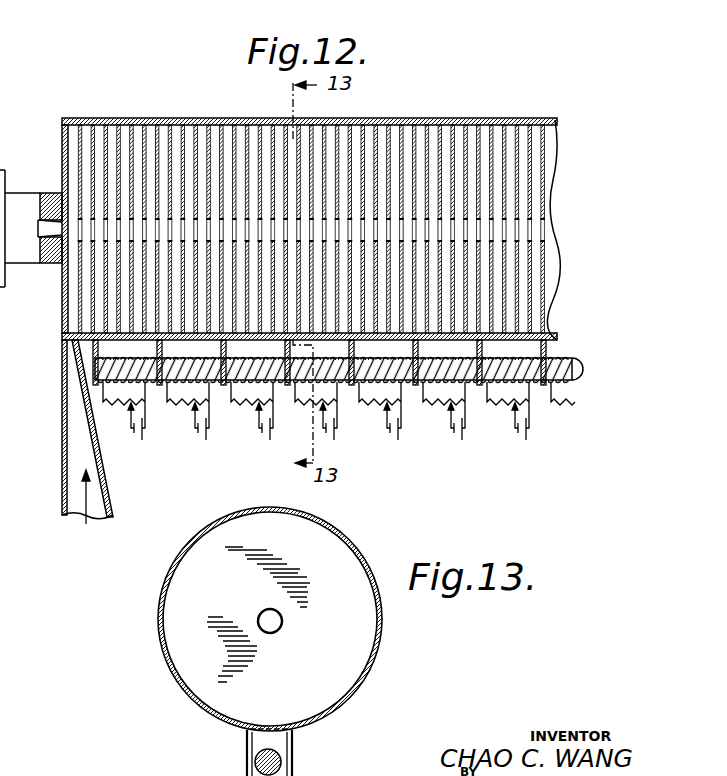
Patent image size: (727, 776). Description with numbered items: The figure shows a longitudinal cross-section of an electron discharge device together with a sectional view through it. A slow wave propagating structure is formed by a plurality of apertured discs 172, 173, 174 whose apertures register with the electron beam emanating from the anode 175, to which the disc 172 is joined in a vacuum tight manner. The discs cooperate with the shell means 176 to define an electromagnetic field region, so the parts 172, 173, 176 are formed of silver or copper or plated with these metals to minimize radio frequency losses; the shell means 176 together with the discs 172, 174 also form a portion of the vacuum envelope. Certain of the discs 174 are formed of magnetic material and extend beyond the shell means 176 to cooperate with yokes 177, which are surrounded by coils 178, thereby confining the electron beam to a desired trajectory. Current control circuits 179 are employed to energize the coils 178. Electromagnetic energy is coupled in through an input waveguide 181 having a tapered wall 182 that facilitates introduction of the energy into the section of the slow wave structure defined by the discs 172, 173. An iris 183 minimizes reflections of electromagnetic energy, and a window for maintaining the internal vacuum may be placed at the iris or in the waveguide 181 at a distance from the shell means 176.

In FIG. 12, the apertured disc 172 is at (63, 152).
In FIG. 12, the apertured disc 173 is at (78, 124).
In FIG. 12, the apertured discs 174 is at (98, 130).
In FIG. 13, the apertured discs 174 is at (208, 672).
In FIG. 12, the anode 175 is at (53, 267).
In FIG. 12, the shell means 176 is at (251, 118).
In FIG. 13, the shell means 176 is at (162, 620).
In FIG. 12, the yokes 177 is at (212, 372).
In FIG. 13, the yokes 177 is at (292, 763).
In FIG. 12, the coils 178 is at (204, 358).
In FIG. 13, the coils 178 is at (256, 763).
In FIG. 12, the current control circuits 179 is at (173, 406).
In FIG. 12, the input waveguide 181 is at (74, 448).
In FIG. 12, the tapered wall 182 is at (110, 461).
In FIG. 12, the iris 183 is at (72, 337).